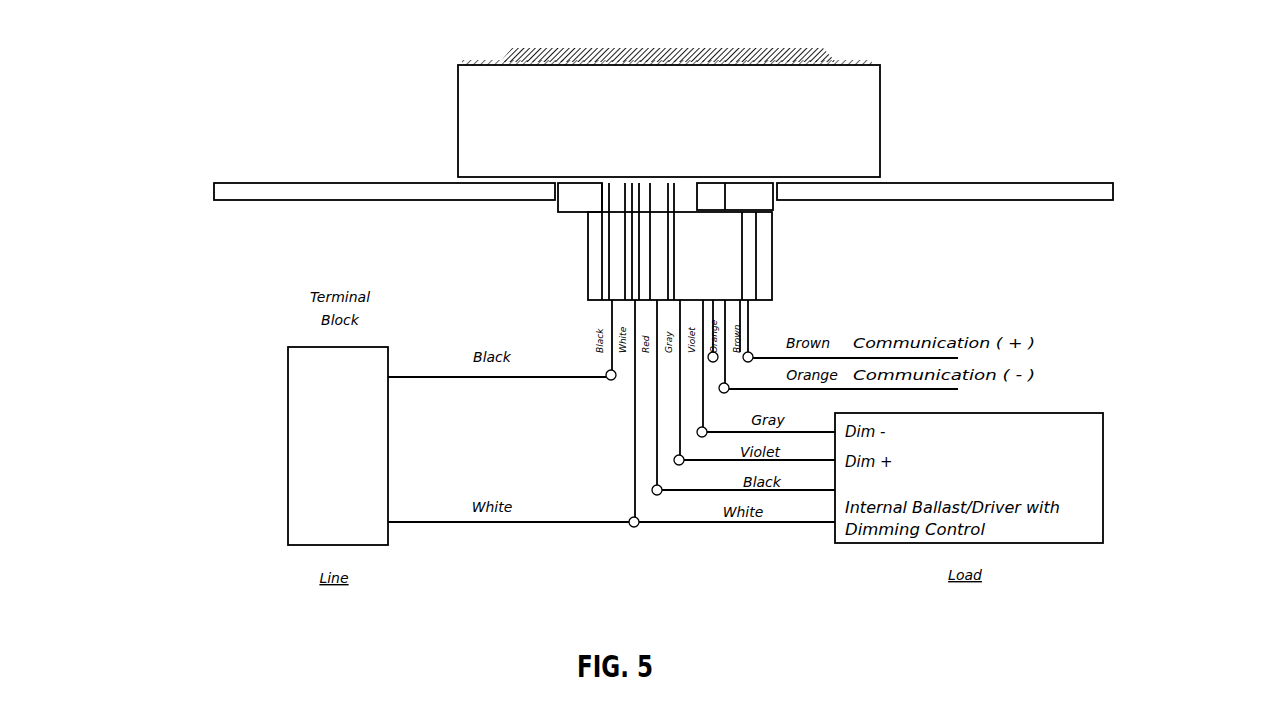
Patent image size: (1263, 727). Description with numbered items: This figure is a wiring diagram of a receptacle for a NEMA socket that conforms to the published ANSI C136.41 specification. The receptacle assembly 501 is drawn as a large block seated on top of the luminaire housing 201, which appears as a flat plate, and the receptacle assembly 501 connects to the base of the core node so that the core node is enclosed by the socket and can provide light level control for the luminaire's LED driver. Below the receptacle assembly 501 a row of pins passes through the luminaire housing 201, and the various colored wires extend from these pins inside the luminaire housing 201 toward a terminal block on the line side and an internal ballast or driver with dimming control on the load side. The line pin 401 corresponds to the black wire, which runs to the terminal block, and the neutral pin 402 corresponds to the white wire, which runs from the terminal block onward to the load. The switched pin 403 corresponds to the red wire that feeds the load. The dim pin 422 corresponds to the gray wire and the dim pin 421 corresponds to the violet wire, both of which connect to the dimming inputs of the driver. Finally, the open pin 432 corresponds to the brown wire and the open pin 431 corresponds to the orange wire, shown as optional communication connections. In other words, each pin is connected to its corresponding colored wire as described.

The receptacle assembly 501 is at (669, 112).
The luminaire housing 201 is at (719, 153).
The line pin 401 is at (502, 363).
The neutral pin 402 is at (611, 443).
The switched pin 403 is at (712, 397).
The dim pin 421 is at (817, 385).
The dim pin 422 is at (829, 370).
The open pin 431 is at (966, 346).
The open pin 432 is at (978, 331).